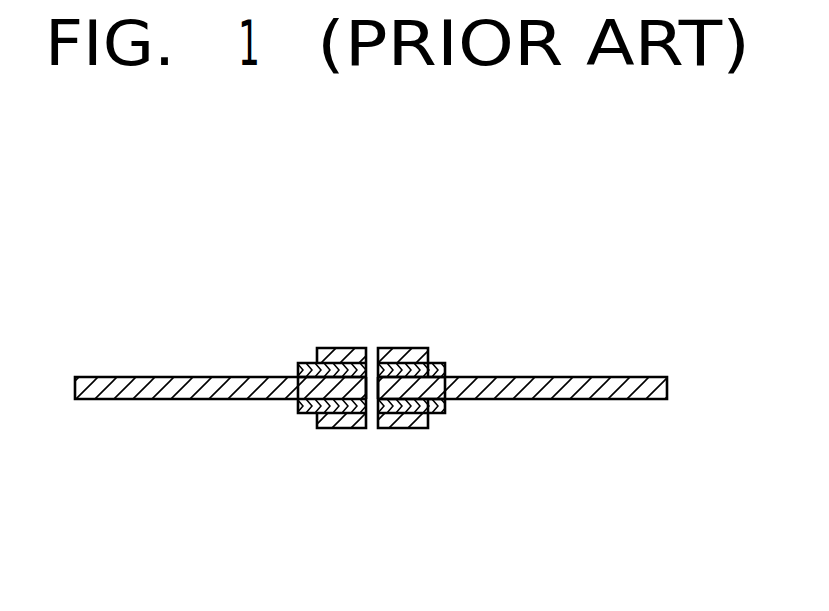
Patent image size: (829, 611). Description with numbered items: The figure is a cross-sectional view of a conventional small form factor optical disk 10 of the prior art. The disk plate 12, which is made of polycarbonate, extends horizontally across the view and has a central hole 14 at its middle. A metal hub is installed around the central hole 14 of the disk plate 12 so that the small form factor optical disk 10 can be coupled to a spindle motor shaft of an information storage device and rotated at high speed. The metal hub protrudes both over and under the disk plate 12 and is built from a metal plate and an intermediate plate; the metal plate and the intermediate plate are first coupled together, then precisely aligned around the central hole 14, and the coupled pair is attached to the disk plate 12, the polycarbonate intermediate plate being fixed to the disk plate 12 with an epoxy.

The small form factor optical disk 10 is at (656, 268).
The disk plate 12 is at (587, 400).
The central hole 14 is at (373, 352).